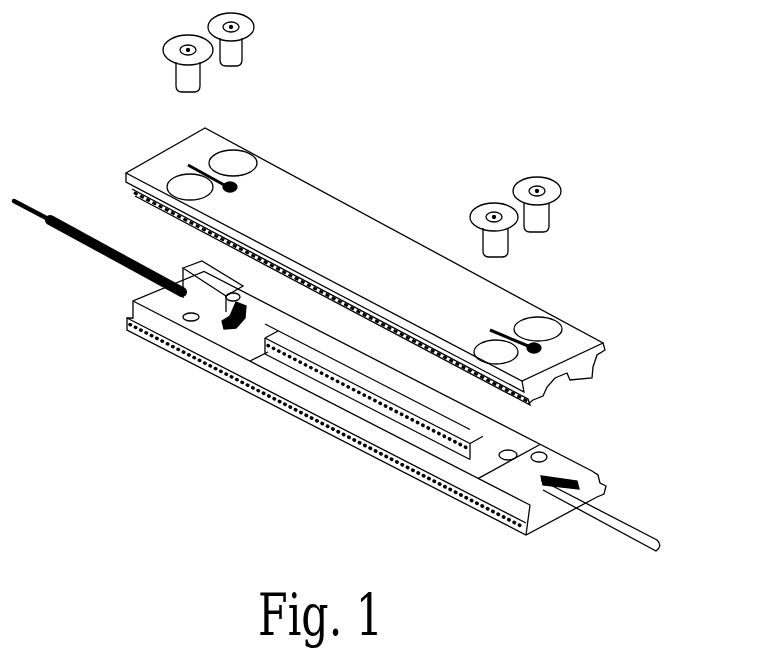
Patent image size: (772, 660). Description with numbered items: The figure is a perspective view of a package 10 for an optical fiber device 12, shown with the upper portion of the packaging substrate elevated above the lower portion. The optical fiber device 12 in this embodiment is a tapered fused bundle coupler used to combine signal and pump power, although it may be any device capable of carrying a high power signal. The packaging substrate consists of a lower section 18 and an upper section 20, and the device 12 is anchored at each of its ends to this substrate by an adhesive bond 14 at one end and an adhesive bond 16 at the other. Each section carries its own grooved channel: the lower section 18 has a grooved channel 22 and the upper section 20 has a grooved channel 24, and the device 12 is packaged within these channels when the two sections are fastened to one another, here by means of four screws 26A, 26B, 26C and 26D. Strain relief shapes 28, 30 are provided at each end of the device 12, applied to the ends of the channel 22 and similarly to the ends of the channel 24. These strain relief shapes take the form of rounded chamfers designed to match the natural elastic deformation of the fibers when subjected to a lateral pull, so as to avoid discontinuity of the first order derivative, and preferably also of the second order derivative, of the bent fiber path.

The package 10 is at (390, 158).
The optical fiber device 12 is at (338, 443).
The adhesive bond 14 is at (203, 298).
The adhesive bond 16 is at (527, 472).
The lower section 18 is at (258, 359).
The upper section 20 is at (519, 296).
The grooved channel 22 is at (467, 430).
The grooved channel 24 is at (553, 391).
The screw 26A is at (173, 56).
The screw 26B is at (254, 25).
The screw 26C is at (486, 204).
The screw 26D is at (553, 192).
The strain relief shape 28 is at (183, 290).
The strain relief shape 30 is at (553, 495).